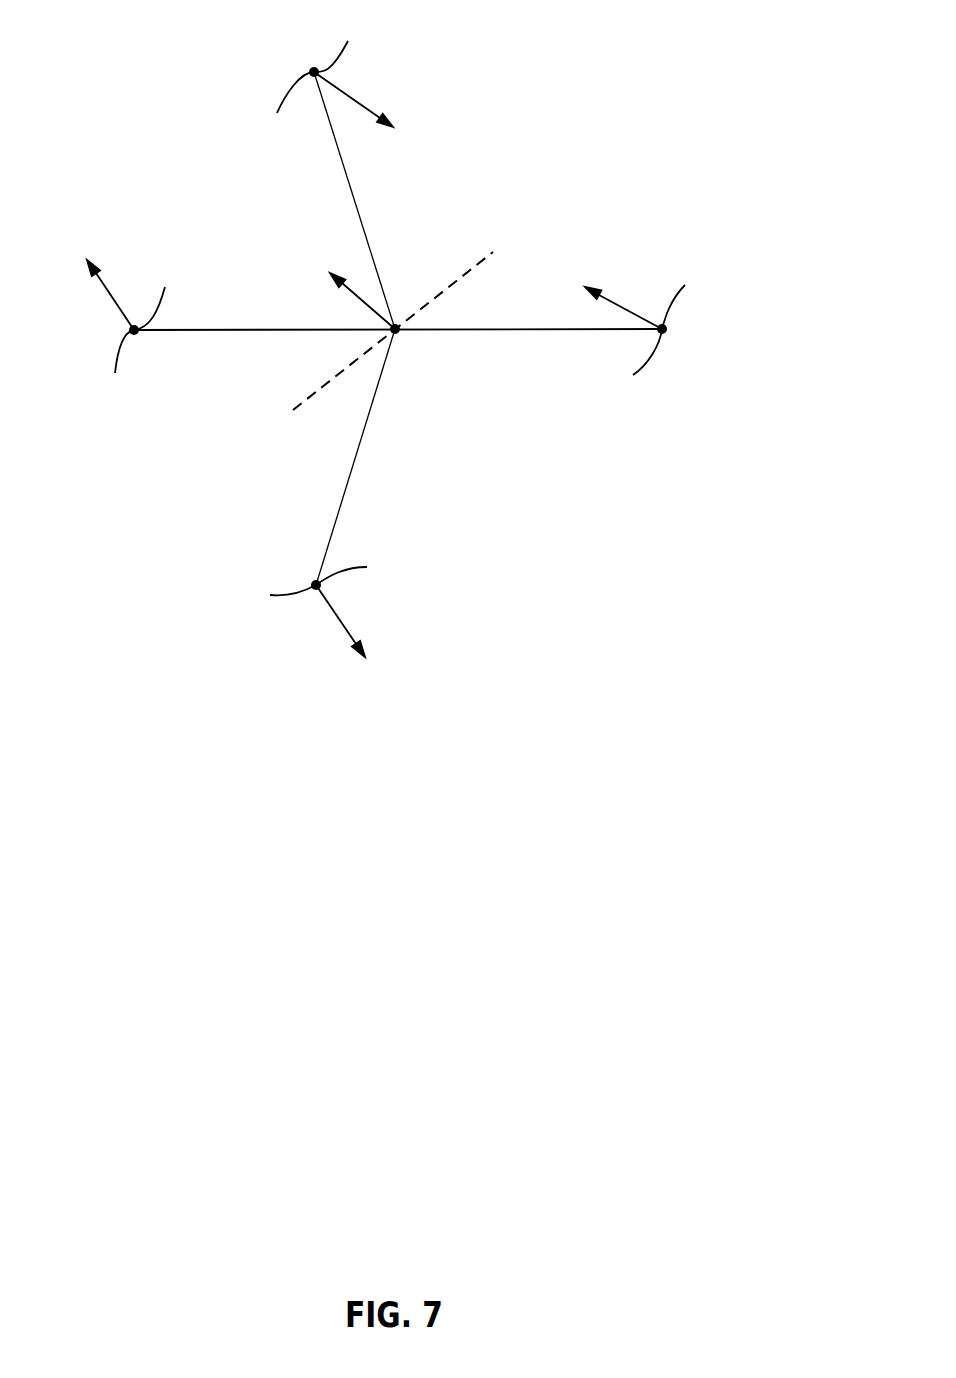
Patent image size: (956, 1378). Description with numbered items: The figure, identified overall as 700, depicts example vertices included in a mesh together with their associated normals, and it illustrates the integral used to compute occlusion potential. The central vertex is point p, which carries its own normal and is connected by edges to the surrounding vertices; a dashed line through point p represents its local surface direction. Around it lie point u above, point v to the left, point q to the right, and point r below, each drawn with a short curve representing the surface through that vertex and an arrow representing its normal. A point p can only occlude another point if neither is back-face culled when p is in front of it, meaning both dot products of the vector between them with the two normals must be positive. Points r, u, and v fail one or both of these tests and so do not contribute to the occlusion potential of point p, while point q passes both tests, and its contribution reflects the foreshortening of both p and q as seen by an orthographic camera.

The diagram of vertex normals and tangent plane 700 is at (732, 70).
The point u is at (335, 84).
The point v is at (126, 316).
The point p is at (372, 320).
The point q is at (637, 330).
The point r is at (318, 610).